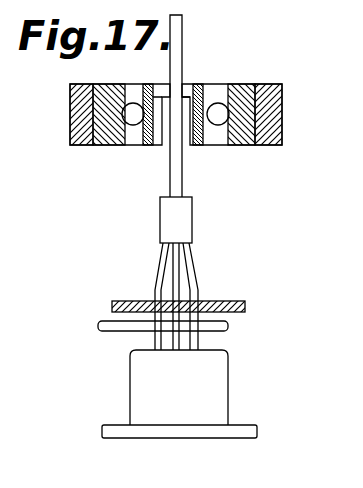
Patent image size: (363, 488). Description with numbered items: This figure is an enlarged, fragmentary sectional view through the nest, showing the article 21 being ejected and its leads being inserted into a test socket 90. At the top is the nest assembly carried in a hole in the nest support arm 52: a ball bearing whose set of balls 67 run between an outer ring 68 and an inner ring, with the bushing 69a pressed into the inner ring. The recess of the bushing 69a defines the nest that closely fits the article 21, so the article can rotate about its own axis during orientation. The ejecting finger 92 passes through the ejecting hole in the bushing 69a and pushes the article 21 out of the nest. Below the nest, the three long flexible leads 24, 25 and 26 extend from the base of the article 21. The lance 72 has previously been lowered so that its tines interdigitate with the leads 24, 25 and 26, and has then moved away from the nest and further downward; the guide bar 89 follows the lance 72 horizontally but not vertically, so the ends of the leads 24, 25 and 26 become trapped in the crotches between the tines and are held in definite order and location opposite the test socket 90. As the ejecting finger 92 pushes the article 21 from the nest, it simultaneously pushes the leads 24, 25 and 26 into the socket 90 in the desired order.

The nest support arm 52 is at (282, 108).
The outer ring 68 is at (248, 84).
The bushing 69a is at (192, 85).
The balls 67 is at (135, 125).
The ejecting finger 92 is at (180, 47).
The article 21 is at (180, 214).
The lance 72 is at (245, 304).
The guide bar 89 is at (228, 326).
The lead 26 is at (157, 277).
The lead 24 is at (197, 278).
The lead 25 is at (190, 258).
The test socket 90 is at (218, 378).